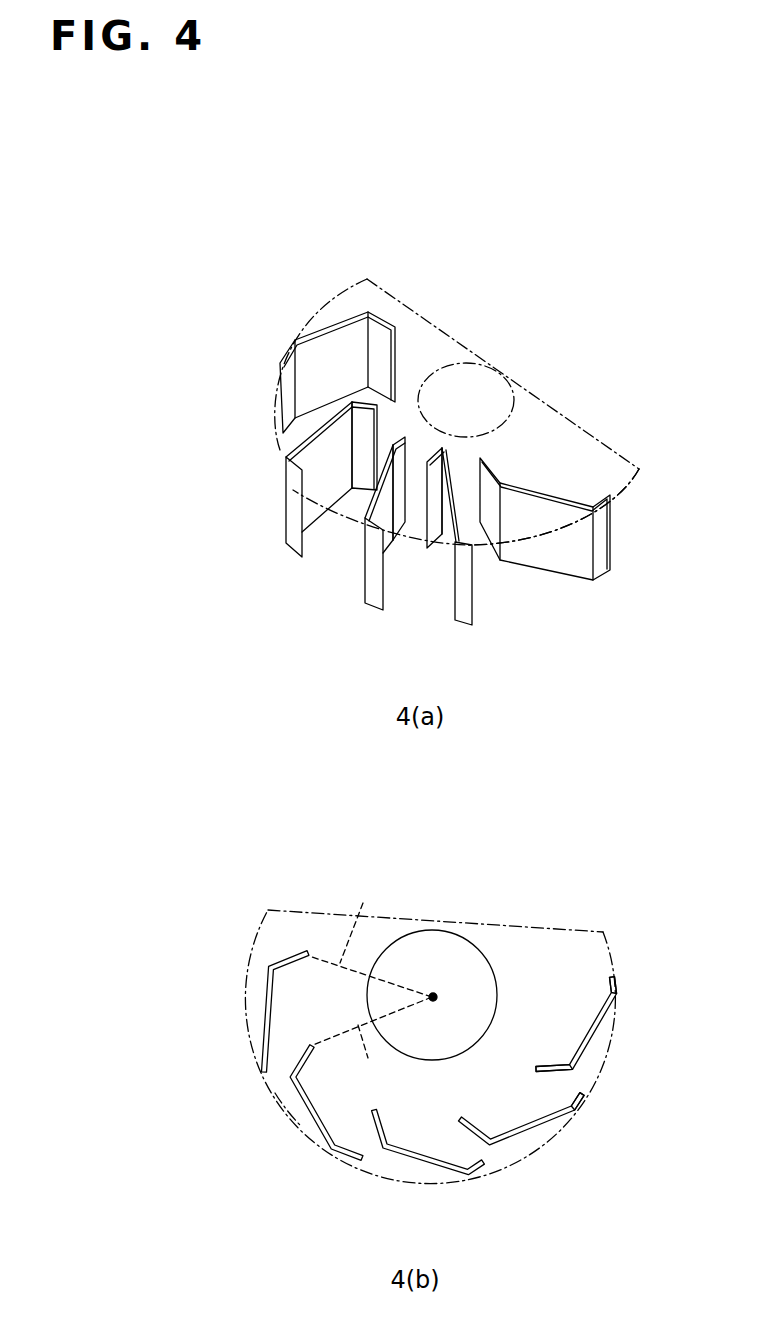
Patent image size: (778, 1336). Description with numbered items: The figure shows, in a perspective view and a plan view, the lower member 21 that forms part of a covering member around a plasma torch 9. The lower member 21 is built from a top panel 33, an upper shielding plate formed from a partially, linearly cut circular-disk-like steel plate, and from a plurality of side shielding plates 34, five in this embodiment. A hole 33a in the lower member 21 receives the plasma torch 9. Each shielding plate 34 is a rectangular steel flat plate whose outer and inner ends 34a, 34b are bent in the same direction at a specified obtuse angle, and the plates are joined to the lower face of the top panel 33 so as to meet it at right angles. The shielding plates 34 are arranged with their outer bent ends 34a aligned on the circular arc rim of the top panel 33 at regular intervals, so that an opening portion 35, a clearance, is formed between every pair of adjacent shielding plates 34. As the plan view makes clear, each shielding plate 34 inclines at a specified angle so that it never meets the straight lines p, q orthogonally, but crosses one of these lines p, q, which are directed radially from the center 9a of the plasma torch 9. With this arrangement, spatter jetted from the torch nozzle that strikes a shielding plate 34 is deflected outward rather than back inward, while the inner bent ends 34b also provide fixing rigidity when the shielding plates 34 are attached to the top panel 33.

The lower member 21 is at (642, 457).
The top panel 33 is at (543, 437).
The hole 33a is at (455, 375).
The side shielding plate 34 is at (312, 356).
The outer bent end 34a is at (613, 983).
The inner bent end 34b is at (548, 1068).
The opening portion 35 is at (417, 535).
The plasma torch 9 is at (487, 965).
The center of the plasma torch 9a is at (433, 992).
The straight line p is at (372, 932).
The straight line q is at (372, 1041).